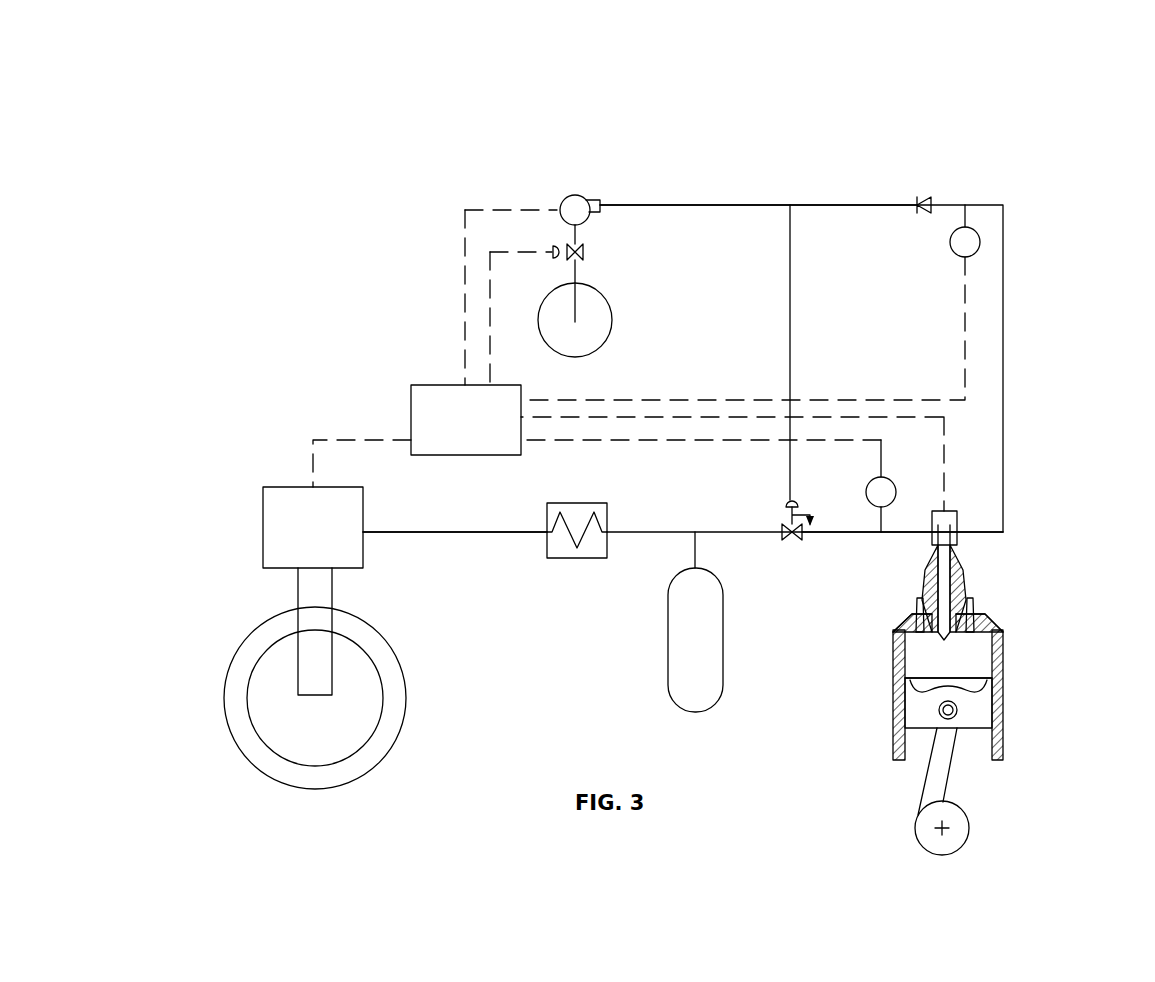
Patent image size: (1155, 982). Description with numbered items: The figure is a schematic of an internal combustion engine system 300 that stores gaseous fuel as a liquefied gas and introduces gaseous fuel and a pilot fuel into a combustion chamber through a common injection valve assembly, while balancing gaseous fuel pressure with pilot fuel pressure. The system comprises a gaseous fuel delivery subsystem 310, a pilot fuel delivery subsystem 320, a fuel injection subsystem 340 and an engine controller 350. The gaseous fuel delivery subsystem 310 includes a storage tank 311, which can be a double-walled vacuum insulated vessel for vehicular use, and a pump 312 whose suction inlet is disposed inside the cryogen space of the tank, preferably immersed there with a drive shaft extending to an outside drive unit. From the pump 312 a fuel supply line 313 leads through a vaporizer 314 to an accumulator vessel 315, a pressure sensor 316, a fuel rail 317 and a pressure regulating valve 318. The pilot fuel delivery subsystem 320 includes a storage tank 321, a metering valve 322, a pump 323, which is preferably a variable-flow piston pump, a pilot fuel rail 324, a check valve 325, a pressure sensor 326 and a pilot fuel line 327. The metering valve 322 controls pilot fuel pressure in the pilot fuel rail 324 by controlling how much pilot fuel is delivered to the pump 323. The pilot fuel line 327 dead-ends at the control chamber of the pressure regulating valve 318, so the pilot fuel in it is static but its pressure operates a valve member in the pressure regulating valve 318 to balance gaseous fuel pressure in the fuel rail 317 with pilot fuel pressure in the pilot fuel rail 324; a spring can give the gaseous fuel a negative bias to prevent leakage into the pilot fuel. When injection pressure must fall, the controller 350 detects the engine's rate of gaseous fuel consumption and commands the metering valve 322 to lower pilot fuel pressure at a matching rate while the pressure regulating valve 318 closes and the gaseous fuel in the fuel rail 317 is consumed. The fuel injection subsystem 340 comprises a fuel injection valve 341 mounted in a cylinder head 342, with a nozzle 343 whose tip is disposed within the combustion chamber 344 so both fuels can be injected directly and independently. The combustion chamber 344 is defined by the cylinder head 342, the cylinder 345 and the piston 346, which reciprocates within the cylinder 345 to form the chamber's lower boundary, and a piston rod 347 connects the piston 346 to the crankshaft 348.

The internal combustion engine system 300 is at (247, 132).
The gaseous fuel delivery subsystem 310 is at (231, 403).
The storage tank 311 is at (296, 720).
The pump 312 is at (296, 528).
The fuel supply line 313 is at (410, 535).
The vaporizer 314 is at (578, 555).
The accumulator vessel 315 is at (690, 650).
The pressure sensor 316 is at (890, 485).
The fuel rail 317 is at (850, 540).
The pressure regulating valve 318 is at (790, 512).
The pilot fuel delivery subsystem 320 is at (518, 139).
The storage tank 321 is at (553, 315).
The metering valve 322 is at (563, 246).
The pump 323 is at (556, 197).
The pilot fuel rail 324 is at (700, 205).
The check valve 325 is at (928, 198).
The pressure sensor 326 is at (968, 250).
The pilot fuel line 327 is at (790, 305).
The fuel injection subsystem 340 is at (1022, 498).
The fuel injection valve 341 is at (958, 547).
The cylinder head 342 is at (960, 582).
The nozzle 343 is at (940, 640).
The combustion chamber 344 is at (970, 674).
The cylinder 345 is at (1000, 648).
The piston 346 is at (985, 708).
The piston rod 347 is at (940, 775).
The crankshaft 348 is at (963, 828).
The engine controller 350 is at (433, 400).